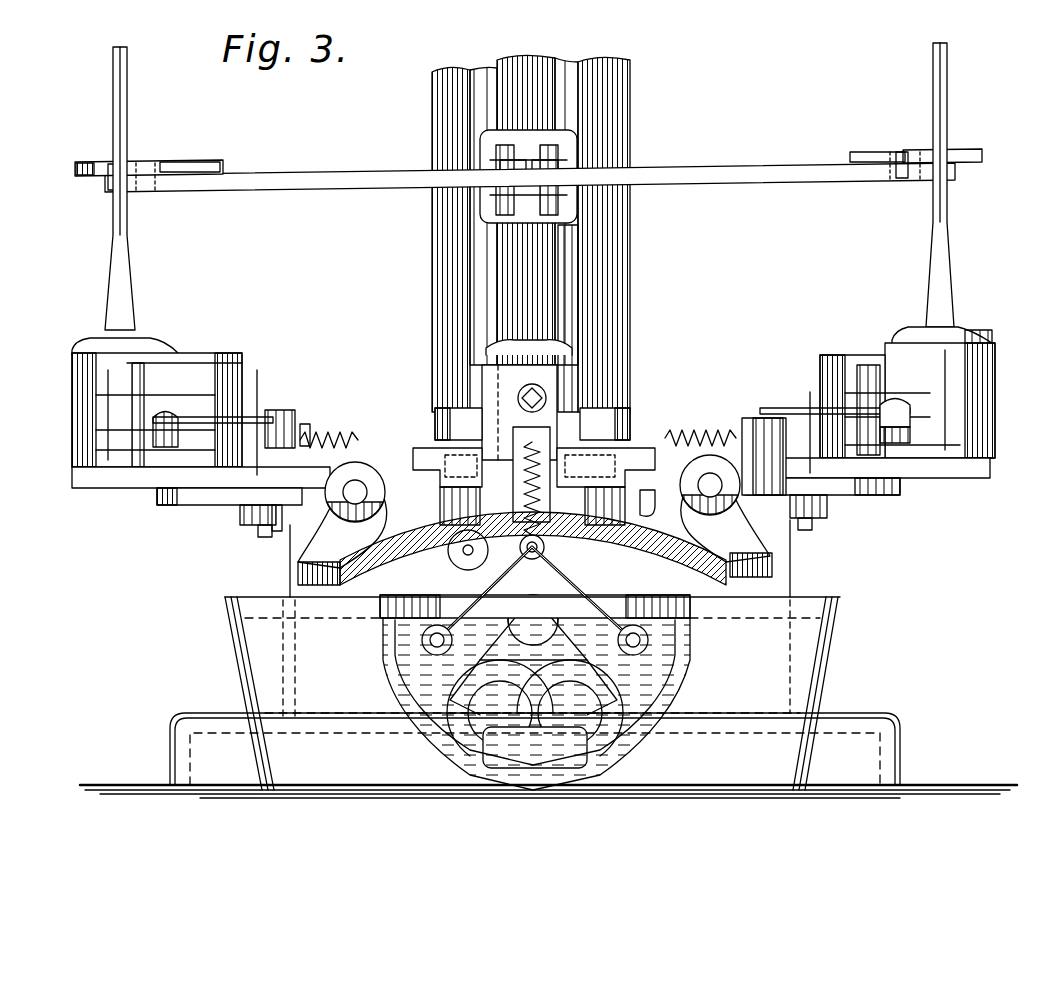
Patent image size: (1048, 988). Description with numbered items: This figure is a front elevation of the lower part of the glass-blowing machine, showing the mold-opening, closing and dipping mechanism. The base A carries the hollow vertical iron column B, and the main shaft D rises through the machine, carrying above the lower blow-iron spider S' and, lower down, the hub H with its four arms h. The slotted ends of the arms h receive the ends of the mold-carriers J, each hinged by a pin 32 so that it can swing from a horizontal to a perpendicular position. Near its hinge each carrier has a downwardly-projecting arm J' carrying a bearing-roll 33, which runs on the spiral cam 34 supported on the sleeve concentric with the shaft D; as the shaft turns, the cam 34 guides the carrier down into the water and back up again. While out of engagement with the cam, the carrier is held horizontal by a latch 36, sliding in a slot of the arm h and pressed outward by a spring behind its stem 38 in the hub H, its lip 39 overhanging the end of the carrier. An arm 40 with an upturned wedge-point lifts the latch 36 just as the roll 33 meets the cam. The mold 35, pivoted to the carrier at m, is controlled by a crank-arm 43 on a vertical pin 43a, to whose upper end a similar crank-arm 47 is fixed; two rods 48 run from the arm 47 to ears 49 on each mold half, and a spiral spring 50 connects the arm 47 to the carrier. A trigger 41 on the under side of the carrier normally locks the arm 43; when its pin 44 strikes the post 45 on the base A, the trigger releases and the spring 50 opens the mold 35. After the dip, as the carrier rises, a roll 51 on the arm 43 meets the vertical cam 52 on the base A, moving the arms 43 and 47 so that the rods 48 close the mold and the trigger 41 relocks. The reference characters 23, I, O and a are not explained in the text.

The upright post 23 is at (128, 128).
The pin 32 is at (355, 480).
The bearing-roll 33 is at (300, 572).
The cam 34 is at (372, 590).
The mold 35 is at (96, 398).
The latch 36 is at (433, 440).
The stem 38 is at (478, 738).
The lip 39 is at (416, 482).
The arm 40 is at (645, 515).
The trigger 41 is at (178, 495).
The crank-arm 43 is at (280, 470).
The vertical pin 43a is at (760, 425).
The pin 44 is at (262, 535).
The post 45 is at (205, 392).
The crank-arm 47 is at (284, 408).
The rods 48 is at (842, 405).
The ears 49 is at (140, 436).
The spiral spring 50 is at (393, 470).
The roll 51 is at (250, 514).
The vertical cam 52 is at (268, 528).
The base A is at (548, 755).
The hollow vertical iron column B is at (622, 236).
The shaft D is at (510, 252).
The hub H is at (490, 385).
The pan I is at (532, 693).
The mold-carrier J is at (533, 531).
The downwardly-projecting arm J' is at (557, 620).
The end piece O is at (92, 163).
The lower blow-iron spider S' is at (528, 160).
The pin a is at (319, 402).
The arms h is at (425, 450).
The mold pivot m is at (470, 612).